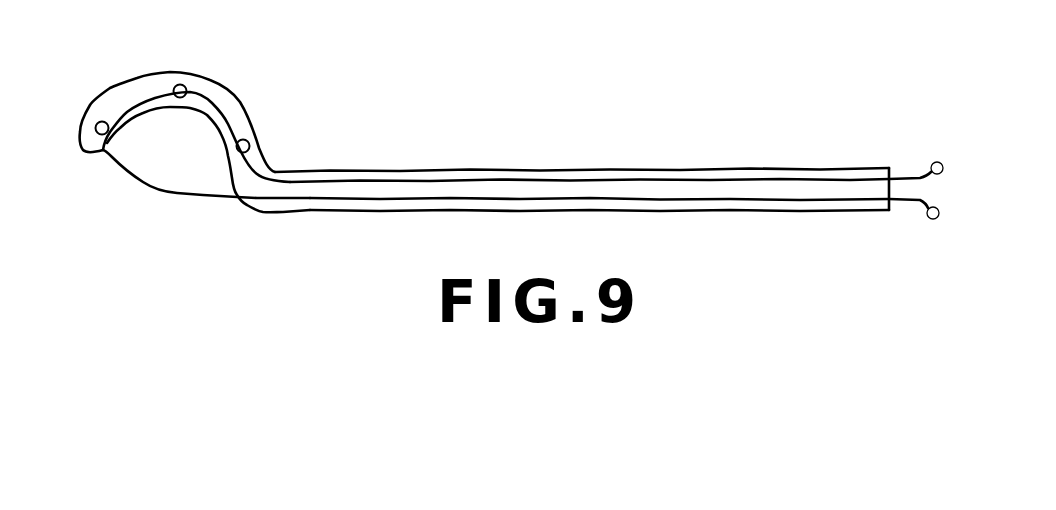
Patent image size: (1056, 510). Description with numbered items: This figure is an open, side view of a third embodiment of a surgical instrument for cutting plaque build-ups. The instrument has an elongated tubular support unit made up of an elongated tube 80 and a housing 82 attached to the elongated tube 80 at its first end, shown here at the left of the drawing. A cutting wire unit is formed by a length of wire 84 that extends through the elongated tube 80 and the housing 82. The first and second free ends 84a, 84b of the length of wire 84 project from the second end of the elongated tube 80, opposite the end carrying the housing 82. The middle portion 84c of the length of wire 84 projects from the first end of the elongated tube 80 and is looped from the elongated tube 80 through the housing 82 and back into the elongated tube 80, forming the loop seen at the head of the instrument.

The elongated tube 80 is at (557, 170).
The housing 82 is at (240, 100).
The length of wire 84 is at (407, 182).
The first free end 84a is at (935, 160).
The second free end 84b is at (933, 220).
The middle portion 84c is at (173, 192).